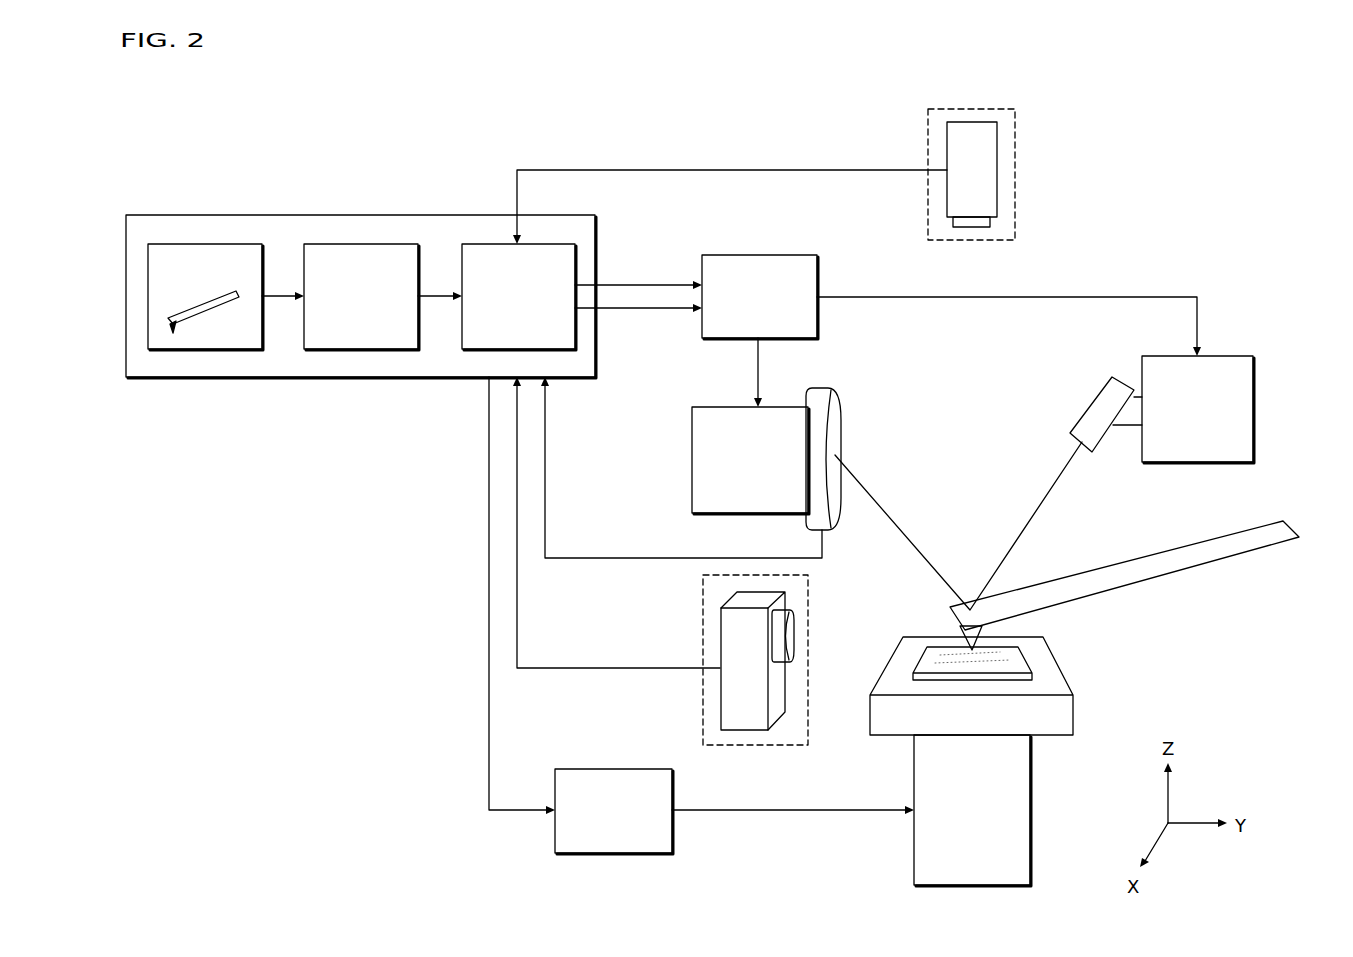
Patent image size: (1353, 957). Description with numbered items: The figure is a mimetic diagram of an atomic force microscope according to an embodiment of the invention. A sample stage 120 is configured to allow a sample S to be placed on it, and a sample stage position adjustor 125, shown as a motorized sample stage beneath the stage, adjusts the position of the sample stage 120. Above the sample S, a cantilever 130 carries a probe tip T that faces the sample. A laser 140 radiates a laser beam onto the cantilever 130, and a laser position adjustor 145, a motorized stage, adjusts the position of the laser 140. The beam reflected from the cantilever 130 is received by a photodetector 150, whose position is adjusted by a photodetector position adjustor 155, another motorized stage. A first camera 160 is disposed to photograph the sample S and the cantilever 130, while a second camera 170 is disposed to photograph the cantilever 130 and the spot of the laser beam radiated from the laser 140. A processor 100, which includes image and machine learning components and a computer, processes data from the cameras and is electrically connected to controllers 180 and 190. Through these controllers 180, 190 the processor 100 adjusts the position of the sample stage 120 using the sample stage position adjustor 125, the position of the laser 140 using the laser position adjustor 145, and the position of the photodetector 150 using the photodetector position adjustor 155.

The processor 100 is at (358, 215).
The second camera 170 is at (1017, 175).
The controller 190 is at (780, 256).
The photodetector position adjustor 155 is at (692, 458).
The photodetector 150 is at (840, 412).
The laser 140 is at (1082, 398).
The laser position adjustor 145 is at (1253, 407).
The cantilever 130 is at (1205, 560).
The probe tip T is at (985, 629).
The sample S is at (1012, 665).
The sample stage 120 is at (1073, 717).
The sample stage position adjustor 125 is at (1032, 817).
The first camera 160 is at (703, 630).
The controller 180 is at (644, 760).